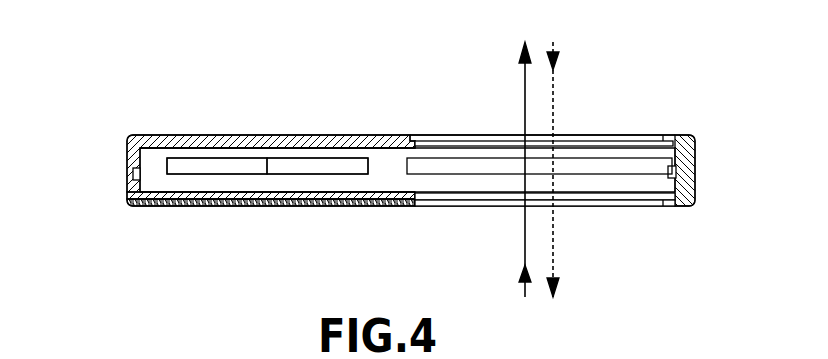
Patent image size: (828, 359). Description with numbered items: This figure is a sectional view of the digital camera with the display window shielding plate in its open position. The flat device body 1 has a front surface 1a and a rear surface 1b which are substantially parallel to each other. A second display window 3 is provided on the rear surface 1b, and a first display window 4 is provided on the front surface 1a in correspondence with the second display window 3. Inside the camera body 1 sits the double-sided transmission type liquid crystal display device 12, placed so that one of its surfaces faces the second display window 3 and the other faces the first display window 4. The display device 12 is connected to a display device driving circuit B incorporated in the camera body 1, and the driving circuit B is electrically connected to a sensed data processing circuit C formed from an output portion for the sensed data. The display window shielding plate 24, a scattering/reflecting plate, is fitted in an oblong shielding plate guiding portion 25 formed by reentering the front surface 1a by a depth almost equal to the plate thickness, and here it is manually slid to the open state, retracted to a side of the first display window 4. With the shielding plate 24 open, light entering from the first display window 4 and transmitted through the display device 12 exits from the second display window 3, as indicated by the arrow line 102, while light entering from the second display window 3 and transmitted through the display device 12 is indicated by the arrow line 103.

The device body 1 is at (376, 174).
The front surface 1a is at (133, 207).
The rear surface 1b is at (189, 135).
The second display window 3 is at (621, 141).
The first display window 4 is at (616, 206).
The transmission type liquid crystal display device 12 is at (450, 164).
The display window shielding plate 24 is at (285, 207).
The shielding plate guiding portion 25 is at (450, 203).
The display device driving circuit B is at (226, 165).
The sensed data processing circuit C is at (322, 165).
The arrow line 102 is at (525, 105).
The arrow line 103 is at (553, 105).